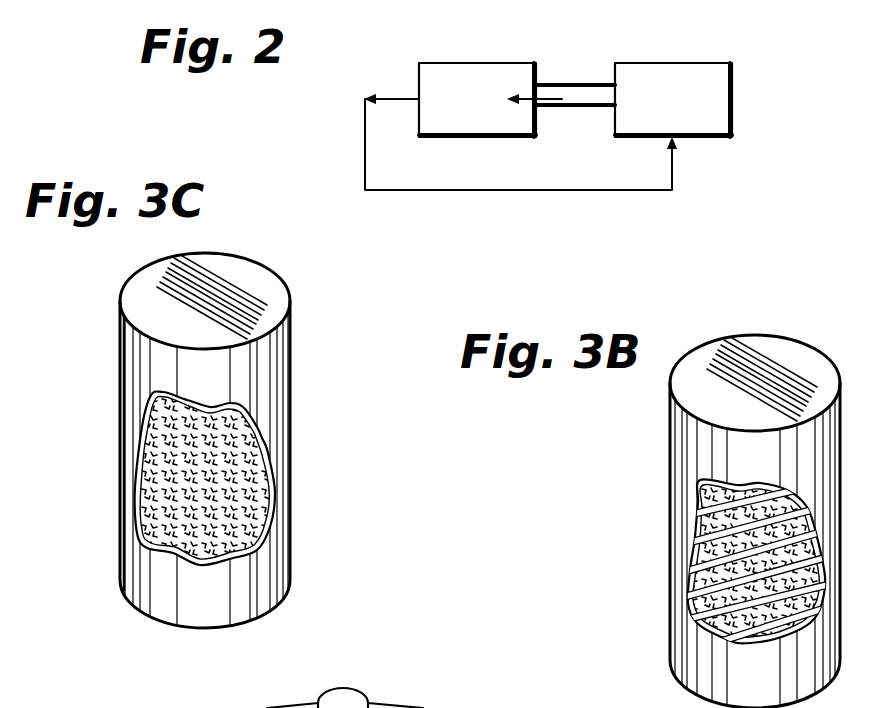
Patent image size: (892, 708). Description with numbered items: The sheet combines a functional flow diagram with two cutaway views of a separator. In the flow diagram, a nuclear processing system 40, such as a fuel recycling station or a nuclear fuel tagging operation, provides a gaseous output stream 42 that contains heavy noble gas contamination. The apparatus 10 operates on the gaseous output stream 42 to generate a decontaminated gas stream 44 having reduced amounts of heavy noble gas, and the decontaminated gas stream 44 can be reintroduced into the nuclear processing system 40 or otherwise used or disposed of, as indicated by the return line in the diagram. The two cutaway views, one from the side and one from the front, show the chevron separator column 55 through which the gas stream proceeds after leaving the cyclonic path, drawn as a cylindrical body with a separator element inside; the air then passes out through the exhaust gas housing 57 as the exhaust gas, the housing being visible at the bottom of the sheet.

In FIG. 2, the apparatus 10 is at (468, 138).
In FIG. 2, the nuclear processing system 40 is at (732, 102).
In FIG. 2, the gaseous output stream 42 is at (548, 93).
In FIG. 2, the decontaminated gas stream 44 is at (395, 95).
In FIG. 3C, the chevron separator column 55 is at (313, 300).
In FIG. 3B, the chevron separator column 55 is at (638, 490).
In FIG. 3C, the exhaust gas housing 57 is at (453, 707).